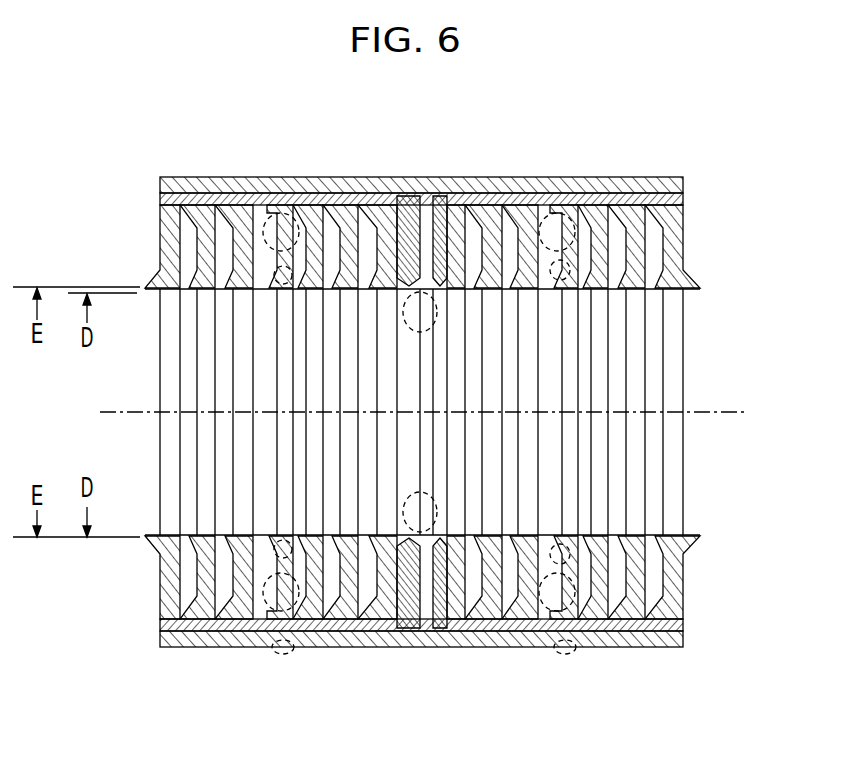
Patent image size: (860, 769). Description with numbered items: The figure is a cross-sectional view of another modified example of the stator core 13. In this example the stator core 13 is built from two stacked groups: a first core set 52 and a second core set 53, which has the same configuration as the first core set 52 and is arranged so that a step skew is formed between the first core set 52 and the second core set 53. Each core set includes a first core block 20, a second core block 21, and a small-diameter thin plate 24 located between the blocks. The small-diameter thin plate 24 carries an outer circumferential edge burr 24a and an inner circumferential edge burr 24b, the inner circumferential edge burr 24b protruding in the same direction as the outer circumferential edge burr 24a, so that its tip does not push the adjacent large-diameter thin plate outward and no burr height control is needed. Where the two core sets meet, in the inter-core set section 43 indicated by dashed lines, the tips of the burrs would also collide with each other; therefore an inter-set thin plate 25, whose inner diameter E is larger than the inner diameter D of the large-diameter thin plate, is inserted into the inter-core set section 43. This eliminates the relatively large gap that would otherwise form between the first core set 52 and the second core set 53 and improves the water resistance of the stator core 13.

The stator core 13 is at (713, 162).
The first core block 20 is at (160, 166).
The second core block 21 is at (285, 166).
The small-diameter thin plate 24 is at (283, 205).
The outer circumferential edge burr 24a is at (560, 234).
The inner circumferential edge burr 24b is at (562, 262).
The inter-set thin plate 25 is at (417, 178).
The inter-core set section 43 is at (400, 510).
The first core set 52 is at (395, 653).
The second core set 53 is at (683, 653).